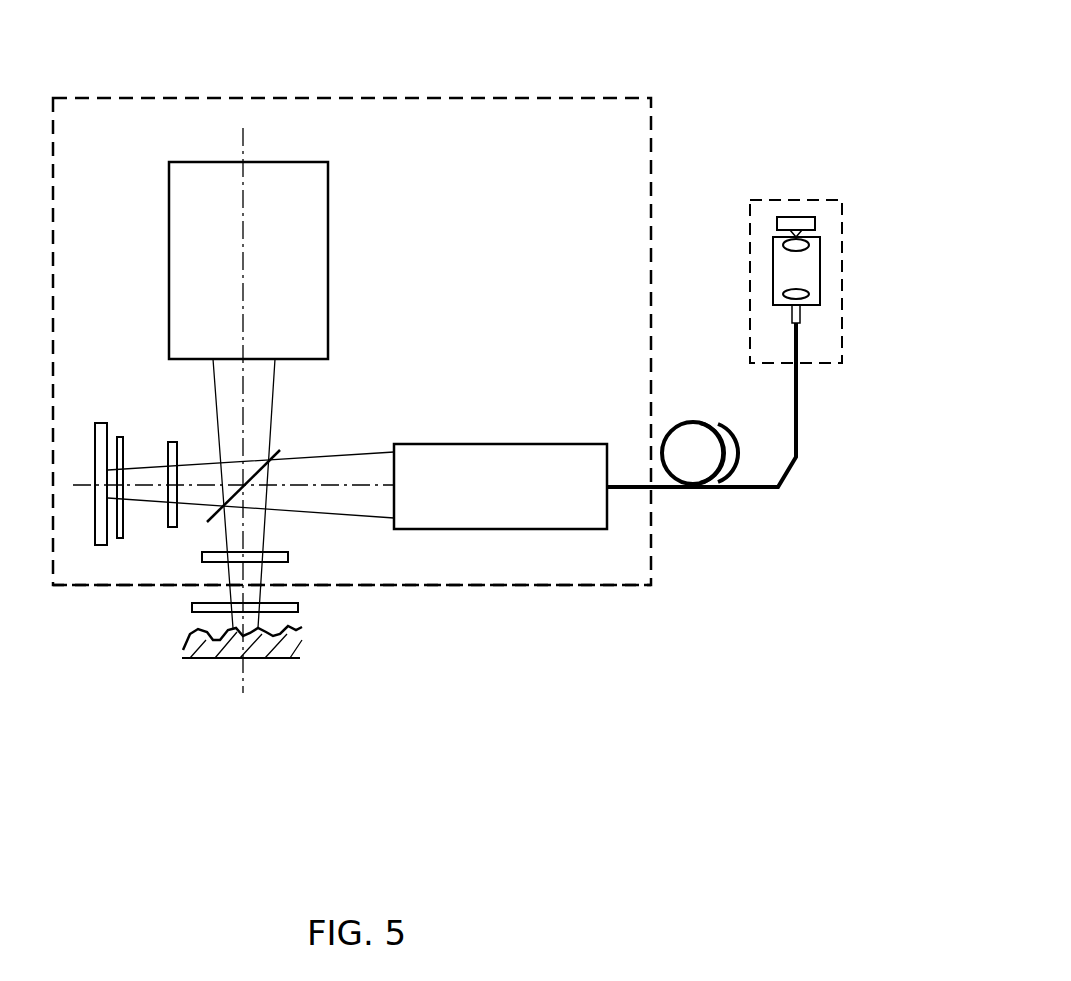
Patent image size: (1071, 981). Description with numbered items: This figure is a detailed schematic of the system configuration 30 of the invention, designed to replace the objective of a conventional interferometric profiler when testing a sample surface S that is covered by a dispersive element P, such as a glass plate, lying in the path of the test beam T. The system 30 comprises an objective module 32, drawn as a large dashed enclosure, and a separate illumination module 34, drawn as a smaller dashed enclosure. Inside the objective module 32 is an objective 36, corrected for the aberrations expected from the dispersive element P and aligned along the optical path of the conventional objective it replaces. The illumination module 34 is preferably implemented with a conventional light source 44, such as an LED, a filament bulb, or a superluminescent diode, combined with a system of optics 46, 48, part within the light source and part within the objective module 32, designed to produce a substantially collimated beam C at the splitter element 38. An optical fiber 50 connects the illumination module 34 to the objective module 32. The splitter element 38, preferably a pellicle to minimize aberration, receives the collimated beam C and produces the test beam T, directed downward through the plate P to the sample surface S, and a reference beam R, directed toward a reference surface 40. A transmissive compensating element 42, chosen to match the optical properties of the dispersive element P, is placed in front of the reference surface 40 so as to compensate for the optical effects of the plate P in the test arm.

The system configuration 30 is at (667, 100).
The objective module 32 is at (651, 217).
The illumination module 34 is at (843, 230).
The objective 36 is at (313, 227).
The splitter element 38 is at (280, 452).
The reference surface 40 is at (100, 545).
The transmissive compensating element 42 is at (118, 437).
The light source 44 is at (800, 220).
The optics 46 is at (820, 278).
The optics 48 is at (502, 465).
The optical fiber 50 is at (787, 478).
The reference beam R is at (202, 487).
The collimated light beam C is at (333, 487).
The test beam T is at (247, 527).
The dispersive element P is at (298, 602).
The sample surface S is at (303, 626).